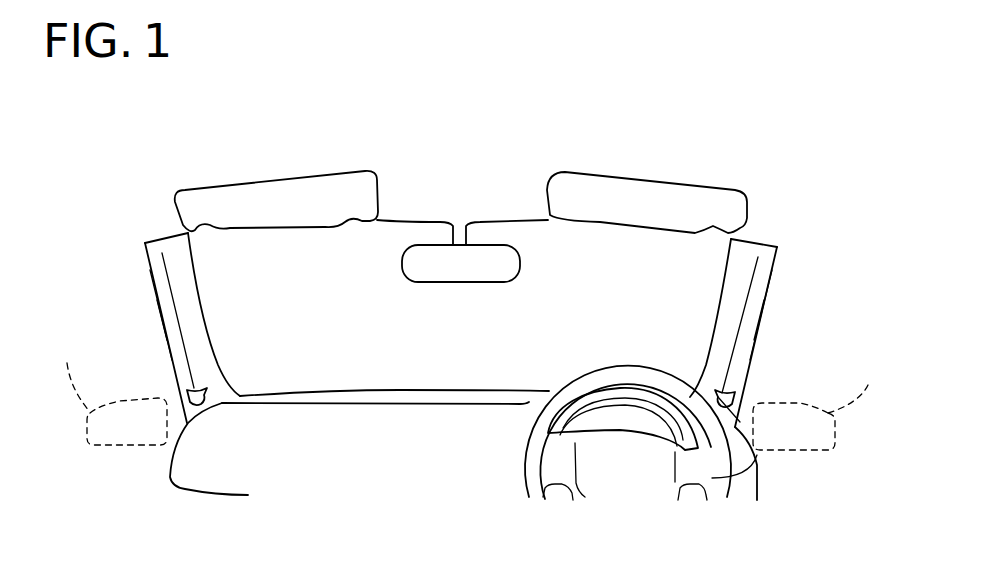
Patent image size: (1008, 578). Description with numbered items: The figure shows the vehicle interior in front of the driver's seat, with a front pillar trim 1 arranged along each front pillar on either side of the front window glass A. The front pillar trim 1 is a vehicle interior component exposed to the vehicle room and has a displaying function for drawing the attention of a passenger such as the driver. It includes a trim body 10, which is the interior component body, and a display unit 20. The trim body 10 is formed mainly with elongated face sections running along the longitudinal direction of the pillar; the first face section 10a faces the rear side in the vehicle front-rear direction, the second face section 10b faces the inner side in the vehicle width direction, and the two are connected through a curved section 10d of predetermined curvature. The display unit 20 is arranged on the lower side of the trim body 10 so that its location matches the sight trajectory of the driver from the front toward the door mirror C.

The front pillar trim 1 is at (145, 232).
The trim body 10 is at (709, 322).
The first face section 10a is at (174, 360).
The second face section 10b is at (190, 298).
The curved section 10d is at (170, 305).
The display unit 20 is at (203, 373).
The front window glass A is at (392, 247).
The door mirror C is at (464, 397).